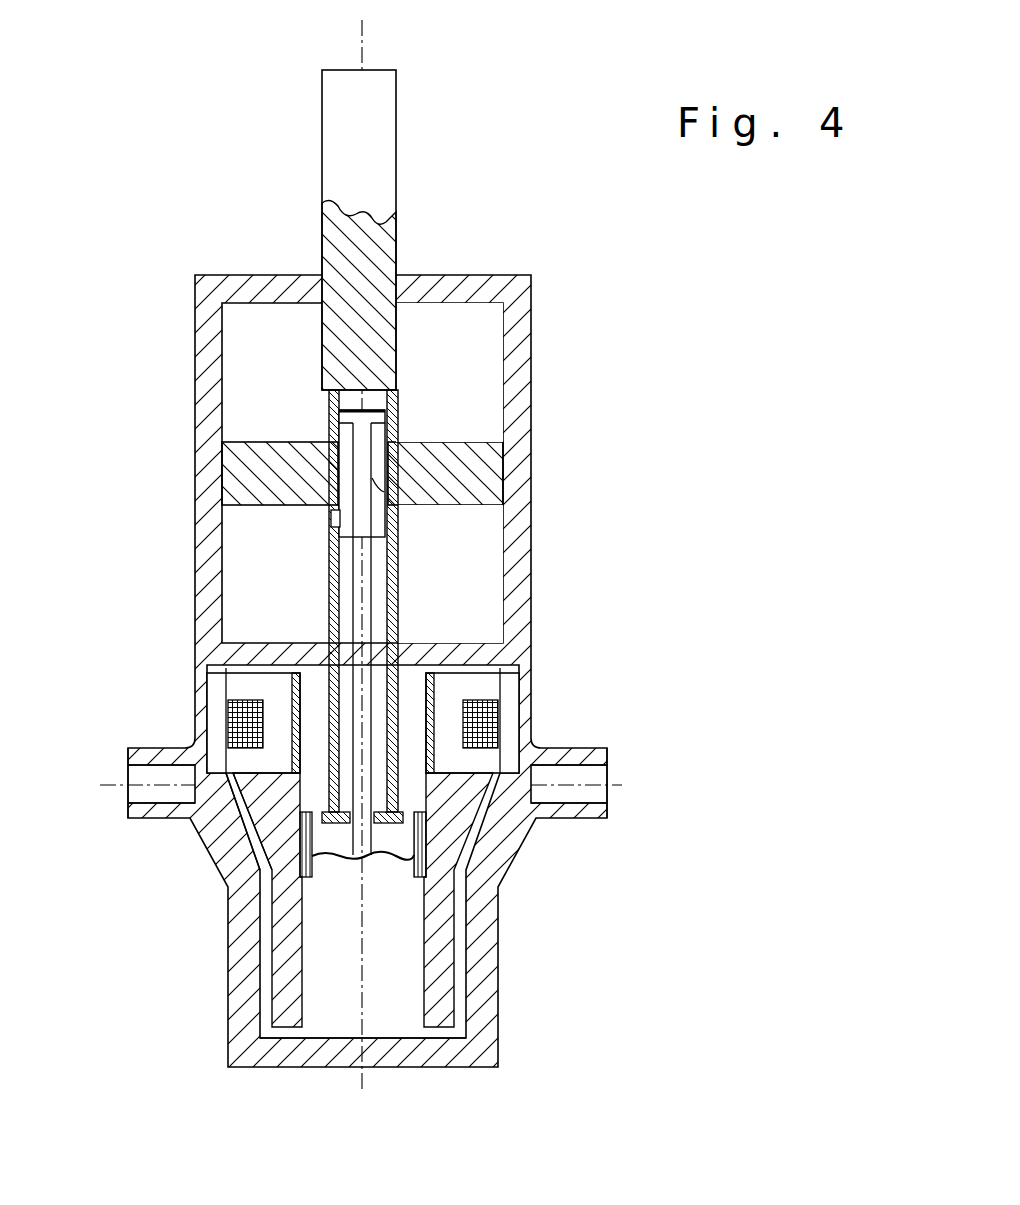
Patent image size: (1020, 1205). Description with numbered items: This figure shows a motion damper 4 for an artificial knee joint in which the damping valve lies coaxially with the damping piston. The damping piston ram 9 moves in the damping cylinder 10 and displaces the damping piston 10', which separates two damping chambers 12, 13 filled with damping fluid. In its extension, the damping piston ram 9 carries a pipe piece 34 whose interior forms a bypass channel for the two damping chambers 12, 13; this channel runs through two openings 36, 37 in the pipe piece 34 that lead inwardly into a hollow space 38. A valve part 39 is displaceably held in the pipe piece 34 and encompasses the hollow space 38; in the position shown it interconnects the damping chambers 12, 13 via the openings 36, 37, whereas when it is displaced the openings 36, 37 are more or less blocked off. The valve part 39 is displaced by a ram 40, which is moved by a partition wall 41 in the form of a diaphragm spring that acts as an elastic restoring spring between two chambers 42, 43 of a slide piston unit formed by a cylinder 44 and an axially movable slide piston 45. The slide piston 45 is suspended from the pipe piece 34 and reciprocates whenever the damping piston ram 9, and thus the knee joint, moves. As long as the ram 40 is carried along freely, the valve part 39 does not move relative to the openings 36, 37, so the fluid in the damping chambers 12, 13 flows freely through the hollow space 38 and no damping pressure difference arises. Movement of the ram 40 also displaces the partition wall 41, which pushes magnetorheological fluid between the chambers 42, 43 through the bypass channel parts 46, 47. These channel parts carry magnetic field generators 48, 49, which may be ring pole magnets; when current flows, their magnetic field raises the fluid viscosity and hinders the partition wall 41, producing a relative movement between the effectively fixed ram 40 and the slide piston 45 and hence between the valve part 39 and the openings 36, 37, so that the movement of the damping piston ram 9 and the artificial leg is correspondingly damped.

The dosing valve 4 is at (612, 361).
The damping piston ram 9 is at (380, 176).
The damping cylinder 10 is at (386, 657).
The damping piston 10' is at (436, 466).
The damping chamber 12 is at (457, 320).
The damping chamber 13 is at (473, 540).
The pipe piece 34 is at (330, 582).
The opening 36 is at (327, 428).
The opening 37 is at (330, 513).
The hollow space 38 is at (343, 470).
The valve part 39 is at (495, 502).
The ram 40 is at (372, 620).
The partition wall 41 is at (330, 855).
The chamber 42 is at (415, 780).
The chamber 43 is at (398, 973).
The cylinder 44 is at (212, 858).
The slide piston 45 is at (430, 872).
The bypass channel part 46 is at (235, 888).
The bypass channel part 47 is at (457, 892).
The magnetic field generator 48 is at (228, 718).
The magnetic field generator 49 is at (490, 723).